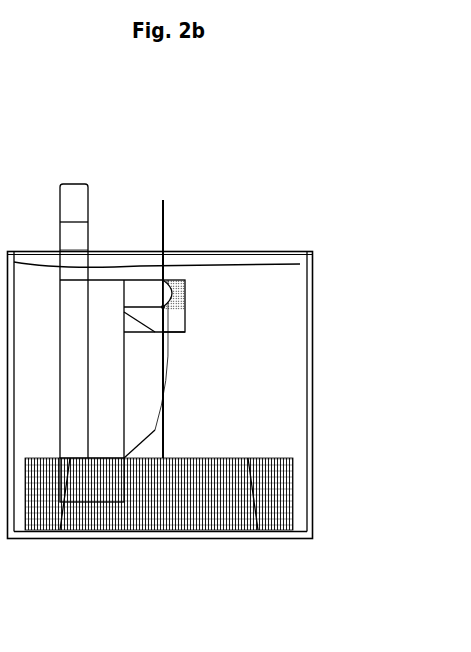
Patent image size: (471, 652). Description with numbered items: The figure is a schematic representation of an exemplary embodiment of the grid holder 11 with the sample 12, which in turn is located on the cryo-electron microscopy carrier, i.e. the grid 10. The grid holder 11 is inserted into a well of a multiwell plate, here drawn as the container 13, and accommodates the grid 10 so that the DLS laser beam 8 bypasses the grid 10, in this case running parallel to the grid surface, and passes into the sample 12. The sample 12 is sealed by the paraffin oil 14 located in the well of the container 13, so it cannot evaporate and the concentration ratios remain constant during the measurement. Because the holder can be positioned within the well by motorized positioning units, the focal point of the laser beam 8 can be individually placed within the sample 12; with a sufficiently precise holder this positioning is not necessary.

The DLS laser beam 8 is at (165, 222).
The cryo-electron microscopy carrier (grid) 10 is at (158, 297).
The grid holder 11 is at (108, 388).
The sample 12 is at (185, 300).
The container 13 is at (313, 313).
The paraffin oil 14 is at (240, 295).